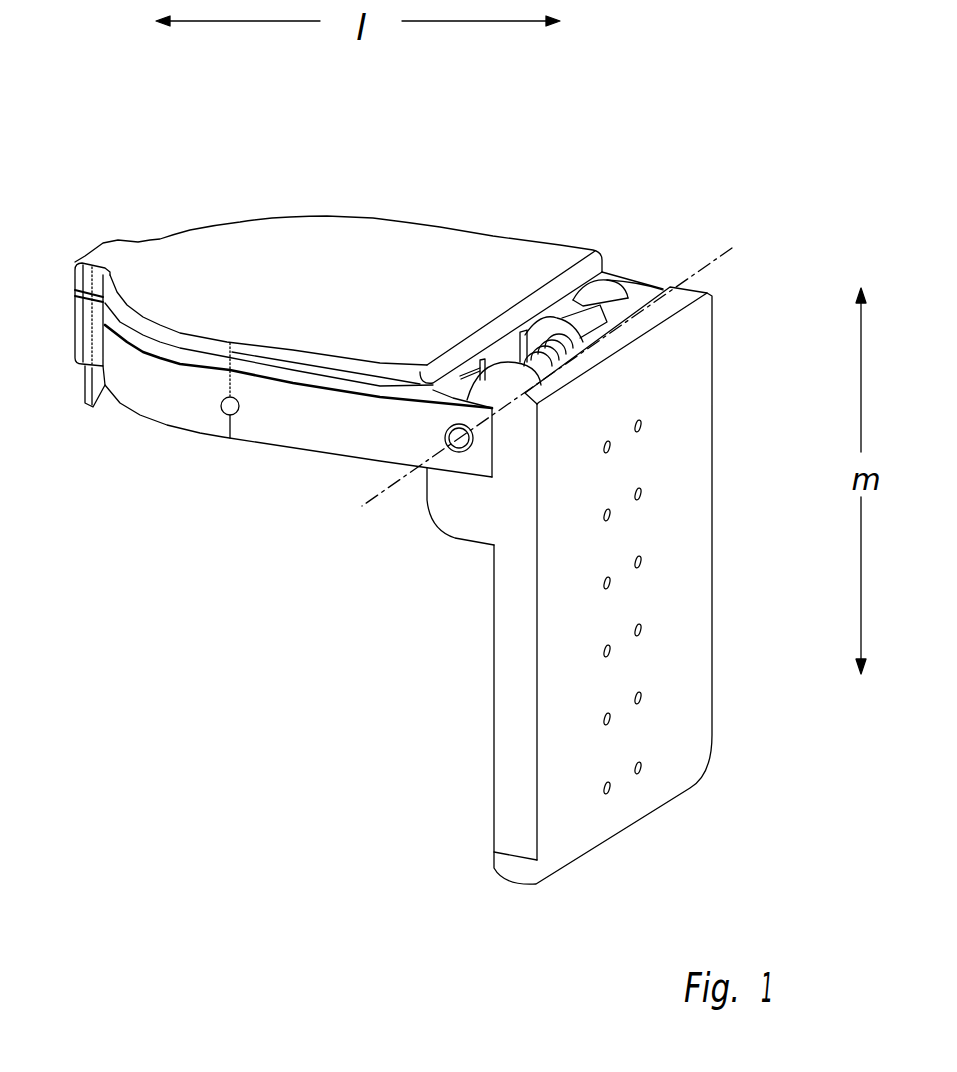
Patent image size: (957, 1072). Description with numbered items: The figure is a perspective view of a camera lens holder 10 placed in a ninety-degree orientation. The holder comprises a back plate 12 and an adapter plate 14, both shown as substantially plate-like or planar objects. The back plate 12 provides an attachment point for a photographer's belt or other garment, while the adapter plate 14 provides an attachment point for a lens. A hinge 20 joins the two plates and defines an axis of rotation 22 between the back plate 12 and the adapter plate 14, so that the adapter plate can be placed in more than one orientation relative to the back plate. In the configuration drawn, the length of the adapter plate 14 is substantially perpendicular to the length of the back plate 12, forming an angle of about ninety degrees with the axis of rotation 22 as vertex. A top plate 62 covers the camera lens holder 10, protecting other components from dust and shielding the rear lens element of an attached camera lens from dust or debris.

The camera lens holder 10 is at (280, 162).
The back plate 12 is at (683, 490).
The adapter plate 14 is at (277, 427).
The hinge 20 is at (633, 254).
The axis of rotation 22 is at (702, 268).
The top plate 62 is at (393, 262).